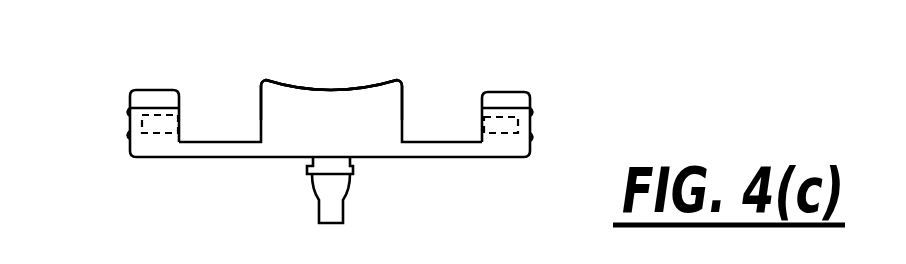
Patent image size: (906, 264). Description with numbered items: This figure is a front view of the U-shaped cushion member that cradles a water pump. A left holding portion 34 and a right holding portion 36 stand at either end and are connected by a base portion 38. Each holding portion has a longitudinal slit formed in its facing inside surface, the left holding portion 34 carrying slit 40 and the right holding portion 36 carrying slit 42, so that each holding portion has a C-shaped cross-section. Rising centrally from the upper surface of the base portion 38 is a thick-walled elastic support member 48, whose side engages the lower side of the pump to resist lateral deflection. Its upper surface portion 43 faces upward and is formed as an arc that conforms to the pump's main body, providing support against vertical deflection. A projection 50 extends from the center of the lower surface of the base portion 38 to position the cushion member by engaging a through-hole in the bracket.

The left holding portion 34 is at (128, 119).
The right holding portion 36 is at (536, 120).
The base portion 38 is at (440, 152).
The longitudinal slit 40 is at (176, 123).
The longitudinal slit 42 is at (483, 120).
The upper surface portion 43 is at (295, 87).
The elastic support member 48 is at (347, 114).
The projection 50 is at (319, 201).